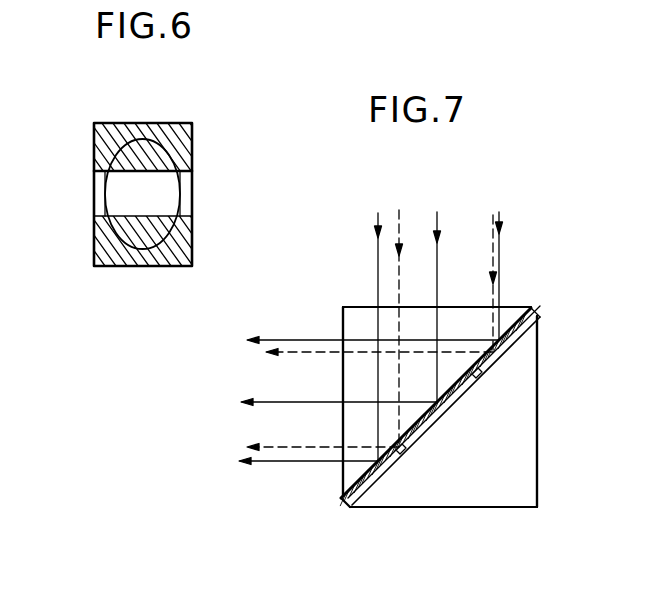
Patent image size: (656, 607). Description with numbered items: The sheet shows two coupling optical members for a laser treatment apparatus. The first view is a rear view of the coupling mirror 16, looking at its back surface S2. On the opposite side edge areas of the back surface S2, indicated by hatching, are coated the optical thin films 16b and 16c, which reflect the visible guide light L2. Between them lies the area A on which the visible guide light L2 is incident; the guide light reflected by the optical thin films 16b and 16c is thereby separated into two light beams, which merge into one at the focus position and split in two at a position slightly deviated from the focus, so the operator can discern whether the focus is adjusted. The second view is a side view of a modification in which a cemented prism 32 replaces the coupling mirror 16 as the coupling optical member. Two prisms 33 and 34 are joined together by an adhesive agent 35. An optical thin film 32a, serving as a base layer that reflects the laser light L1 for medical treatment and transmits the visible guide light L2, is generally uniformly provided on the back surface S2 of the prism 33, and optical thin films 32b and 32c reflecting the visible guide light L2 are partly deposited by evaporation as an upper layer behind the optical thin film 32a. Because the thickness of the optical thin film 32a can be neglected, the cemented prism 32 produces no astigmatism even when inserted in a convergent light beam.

In FIG. 6, the coupling mirror 16 is at (192, 176).
In FIG. 6, the optical thin film 16b is at (107, 143).
In FIG. 6, the optical thin film 16c is at (110, 252).
In FIG. 6, the back surface S2 is at (102, 203).
In FIG. 7, the back surface S2 is at (344, 487).
In FIG. 6, the area A is at (170, 198).
In FIG. 7, the cemented prism 32 is at (543, 472).
In FIG. 7, the optical thin film 32a is at (522, 307).
In FIG. 7, the optical thin film 32b is at (538, 326).
In FIG. 7, the optical thin film 32c is at (357, 487).
In FIG. 7, the prism 33 is at (353, 318).
In FIG. 7, the prism 34 is at (475, 497).
In FIG. 7, the adhesive agent 35 is at (467, 389).
In FIG. 7, the laser light for medical treatment L1 is at (438, 224).
In FIG. 7, the visible guide light L2 is at (401, 229).